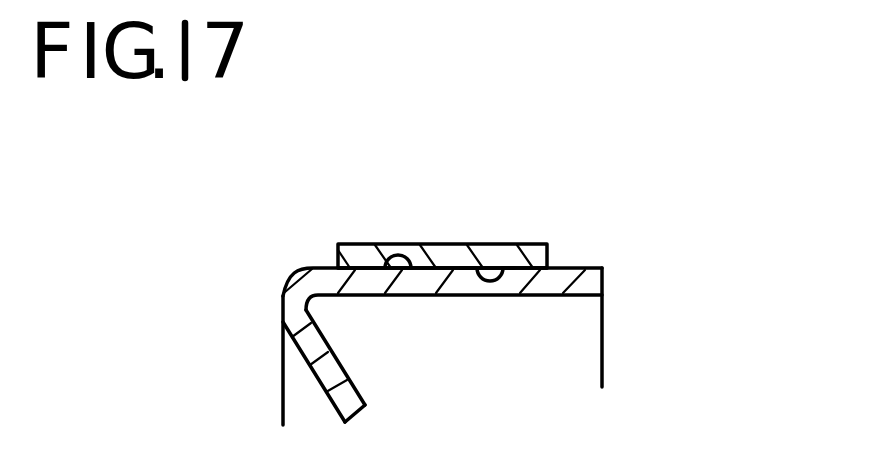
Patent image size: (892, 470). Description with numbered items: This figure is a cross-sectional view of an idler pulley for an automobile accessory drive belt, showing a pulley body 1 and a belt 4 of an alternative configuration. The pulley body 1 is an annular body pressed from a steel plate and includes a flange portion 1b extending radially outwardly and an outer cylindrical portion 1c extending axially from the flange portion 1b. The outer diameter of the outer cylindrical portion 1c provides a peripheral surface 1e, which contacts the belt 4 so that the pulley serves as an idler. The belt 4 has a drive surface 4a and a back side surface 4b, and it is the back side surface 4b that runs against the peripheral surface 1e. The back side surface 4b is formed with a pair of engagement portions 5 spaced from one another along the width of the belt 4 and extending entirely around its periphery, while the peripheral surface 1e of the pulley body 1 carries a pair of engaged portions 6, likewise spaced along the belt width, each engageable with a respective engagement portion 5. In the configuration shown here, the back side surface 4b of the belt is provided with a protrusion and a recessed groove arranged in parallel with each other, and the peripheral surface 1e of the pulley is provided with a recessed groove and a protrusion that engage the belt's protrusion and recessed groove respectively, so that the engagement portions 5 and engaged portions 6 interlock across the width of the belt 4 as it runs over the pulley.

The pulley body 1 is at (628, 252).
The flange portion 1b is at (303, 353).
The outer cylindrical portion 1c is at (468, 268).
The peripheral surface 1e is at (574, 268).
The belt 4 is at (366, 260).
The drive surface 4a is at (348, 245).
The back side surface 4b is at (370, 266).
The engagement portion 5 is at (397, 254).
The engaged portion 6 is at (398, 282).